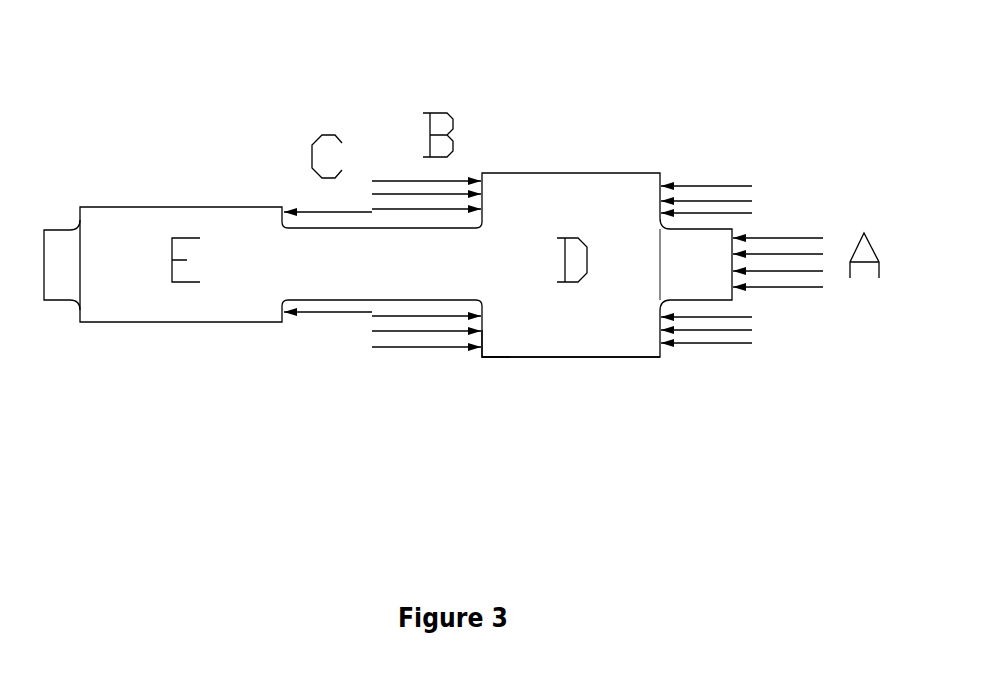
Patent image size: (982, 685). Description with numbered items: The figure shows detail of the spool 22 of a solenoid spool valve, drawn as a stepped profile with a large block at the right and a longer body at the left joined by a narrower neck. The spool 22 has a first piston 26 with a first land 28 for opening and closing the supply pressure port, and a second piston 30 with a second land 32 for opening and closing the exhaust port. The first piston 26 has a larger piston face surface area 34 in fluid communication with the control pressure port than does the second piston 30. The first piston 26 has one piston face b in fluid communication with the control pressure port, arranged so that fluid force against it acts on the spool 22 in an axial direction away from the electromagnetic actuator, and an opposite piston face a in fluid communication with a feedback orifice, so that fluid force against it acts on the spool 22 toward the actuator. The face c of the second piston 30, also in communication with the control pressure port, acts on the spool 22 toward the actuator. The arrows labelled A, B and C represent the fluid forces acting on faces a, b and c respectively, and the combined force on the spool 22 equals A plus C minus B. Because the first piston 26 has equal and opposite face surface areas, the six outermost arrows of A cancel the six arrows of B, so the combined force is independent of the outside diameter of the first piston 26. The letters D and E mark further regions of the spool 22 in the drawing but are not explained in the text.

The spool 22 is at (303, 290).
The first piston 26 is at (522, 193).
The first land 28 is at (572, 350).
The second piston 30 is at (107, 221).
The second land 32 is at (185, 210).
The piston face surface area 34 is at (482, 350).
The opposite piston face a is at (662, 200).
The piston face b is at (484, 208).
The face of the second piston c is at (288, 216).
The fluid force on face (a) A is at (864, 255).
The fluid force on face (b) B is at (438, 135).
The fluid force on face (c) C is at (327, 156).
The zone D is at (572, 260).
The zone E is at (186, 260).